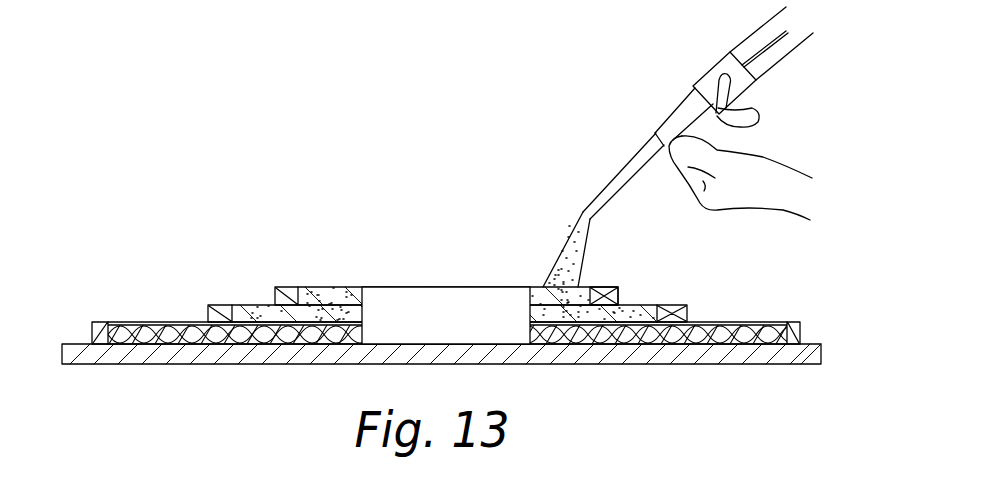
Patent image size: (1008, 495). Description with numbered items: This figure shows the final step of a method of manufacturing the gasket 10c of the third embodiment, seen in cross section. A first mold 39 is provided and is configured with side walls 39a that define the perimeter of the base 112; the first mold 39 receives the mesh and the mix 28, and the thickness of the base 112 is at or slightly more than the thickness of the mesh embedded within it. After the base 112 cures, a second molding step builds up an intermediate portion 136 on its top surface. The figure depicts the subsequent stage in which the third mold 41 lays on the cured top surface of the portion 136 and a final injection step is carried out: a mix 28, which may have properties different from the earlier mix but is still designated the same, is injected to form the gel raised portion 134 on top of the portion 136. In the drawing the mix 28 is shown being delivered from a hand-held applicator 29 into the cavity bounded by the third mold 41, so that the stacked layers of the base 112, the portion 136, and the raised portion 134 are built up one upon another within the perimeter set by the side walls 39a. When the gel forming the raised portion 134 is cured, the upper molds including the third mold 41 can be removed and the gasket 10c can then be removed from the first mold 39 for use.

The gasket 10c is at (215, 232).
The mix 28 is at (562, 262).
The spray gun 29 is at (684, 108).
The first mold 39 is at (770, 362).
The side walls 39a is at (802, 329).
The third mold 41 is at (618, 295).
The base 112 is at (147, 332).
The raised portion 134 is at (320, 287).
The portion 136 is at (240, 305).